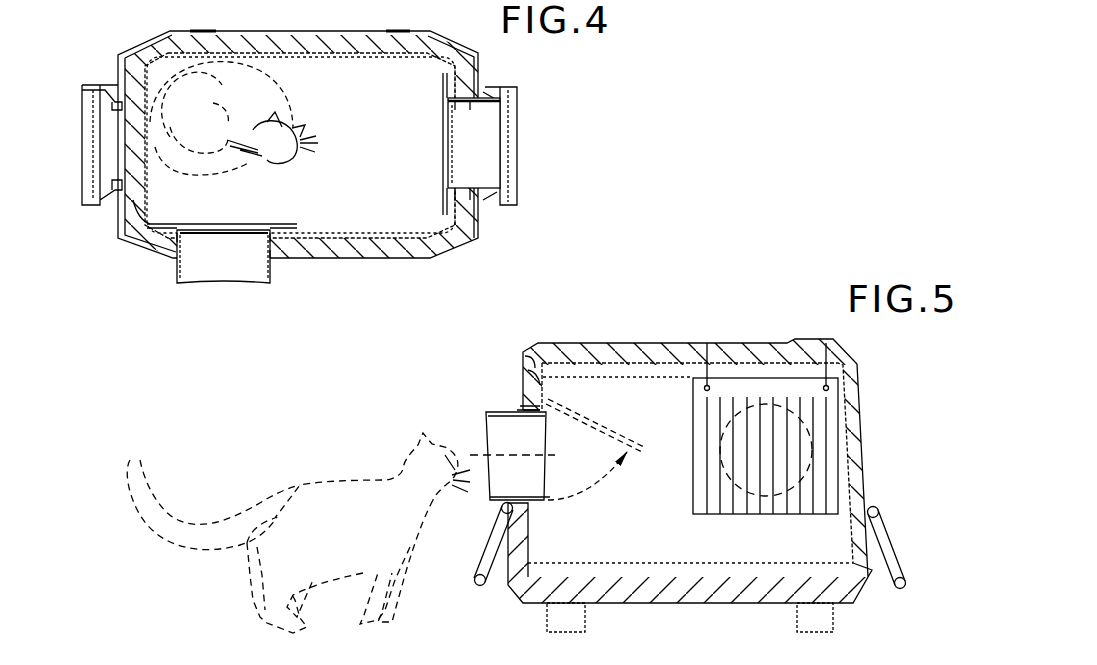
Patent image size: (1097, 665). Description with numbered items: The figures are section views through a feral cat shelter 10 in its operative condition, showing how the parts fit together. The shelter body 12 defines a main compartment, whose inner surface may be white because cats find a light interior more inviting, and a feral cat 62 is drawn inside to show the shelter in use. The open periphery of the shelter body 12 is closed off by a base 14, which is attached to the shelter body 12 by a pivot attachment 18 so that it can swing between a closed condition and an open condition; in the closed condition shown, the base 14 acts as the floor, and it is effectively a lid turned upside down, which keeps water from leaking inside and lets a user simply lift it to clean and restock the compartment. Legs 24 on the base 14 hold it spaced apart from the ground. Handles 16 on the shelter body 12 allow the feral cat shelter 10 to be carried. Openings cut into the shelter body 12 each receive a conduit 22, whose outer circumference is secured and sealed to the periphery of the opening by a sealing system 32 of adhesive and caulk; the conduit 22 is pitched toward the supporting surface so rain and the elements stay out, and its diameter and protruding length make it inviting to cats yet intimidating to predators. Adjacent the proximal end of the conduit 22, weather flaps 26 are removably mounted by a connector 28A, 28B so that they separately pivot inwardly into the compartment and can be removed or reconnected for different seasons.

In FIG. 4, the feral cat shelter 10 is at (133, 267).
In FIG. 5, the feral cat shelter 10 is at (722, 306).
In FIG. 4, the shelter body 12 is at (301, 31).
In FIG. 5, the shelter body 12 is at (690, 471).
In FIG. 4, the base 14 is at (352, 110).
In FIG. 5, the base 14 is at (687, 605).
In FIG. 4, the handles 16 is at (92, 85).
In FIG. 5, the handles 16 is at (478, 586).
In FIG. 4, the pivot attachment 18 is at (204, 31).
In FIG. 4, the conduit 22 is at (500, 142).
In FIG. 5, the conduit 22 is at (487, 425).
In FIG. 5, the legs 24 is at (562, 633).
In FIG. 4, the weather flaps 26 is at (443, 107).
In FIG. 5, the weather flaps 26 is at (693, 383).
In FIG. 5, the hinge 28A is at (520, 362).
In FIG. 5, the hinge pin 28B is at (705, 345).
In FIG. 4, the sealing system 32 is at (443, 203).
In FIG. 5, the sealing system 32 is at (520, 410).
In FIG. 4, the feral cats 62 is at (325, 152).
In FIG. 5, the feral cats 62 is at (277, 483).